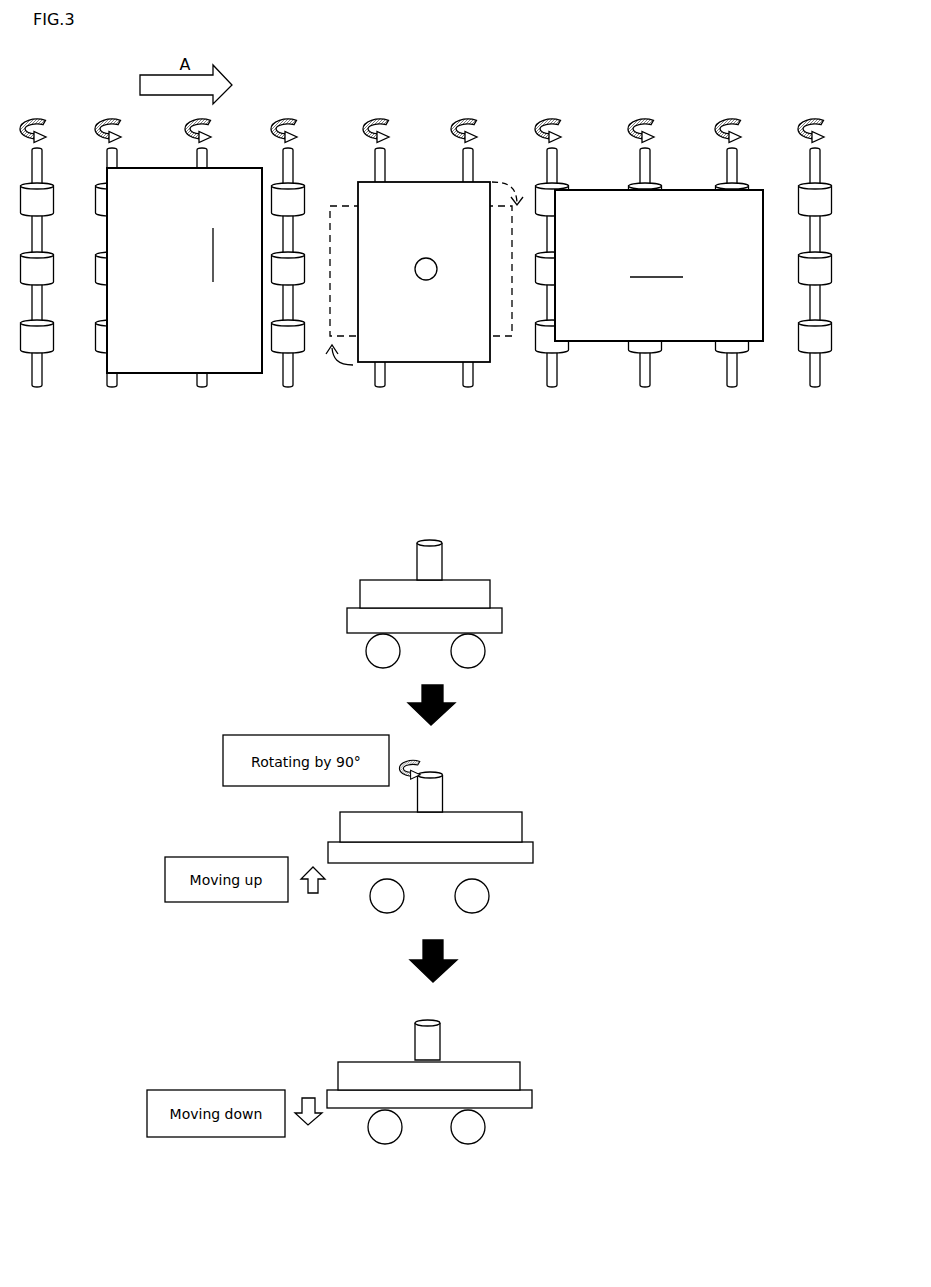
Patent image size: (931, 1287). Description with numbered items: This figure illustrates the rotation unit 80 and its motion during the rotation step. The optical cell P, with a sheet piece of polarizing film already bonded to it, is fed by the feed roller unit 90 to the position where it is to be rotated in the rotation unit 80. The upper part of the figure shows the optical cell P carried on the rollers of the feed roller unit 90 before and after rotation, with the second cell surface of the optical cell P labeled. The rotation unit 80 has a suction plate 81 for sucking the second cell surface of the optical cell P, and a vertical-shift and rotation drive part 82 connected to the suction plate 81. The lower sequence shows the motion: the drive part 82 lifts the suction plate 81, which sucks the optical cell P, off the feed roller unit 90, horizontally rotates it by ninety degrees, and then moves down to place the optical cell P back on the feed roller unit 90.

The rotation unit 80 is at (400, 370).
The suction plate 81 is at (427, 350).
The vertical-shift and rotation drive part 82 is at (434, 279).
The feed roller unit 90 is at (35, 394).
The optical cell P is at (493, 627).